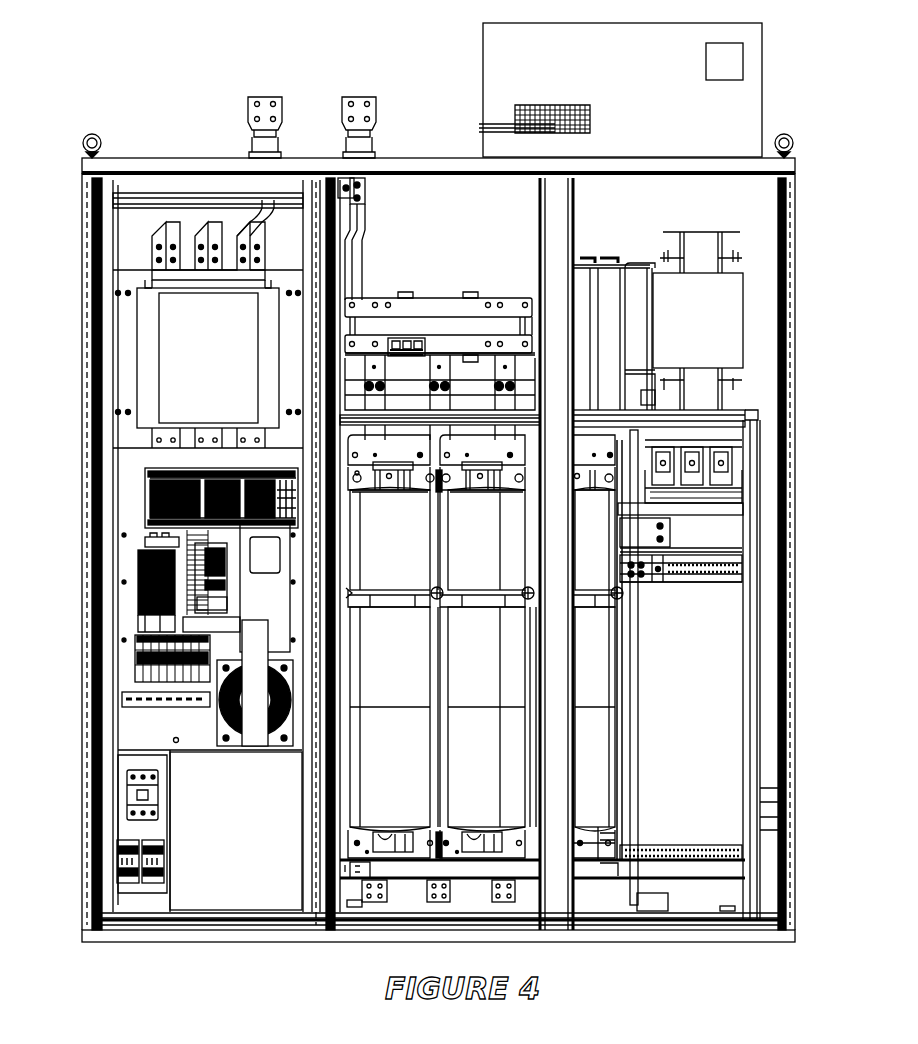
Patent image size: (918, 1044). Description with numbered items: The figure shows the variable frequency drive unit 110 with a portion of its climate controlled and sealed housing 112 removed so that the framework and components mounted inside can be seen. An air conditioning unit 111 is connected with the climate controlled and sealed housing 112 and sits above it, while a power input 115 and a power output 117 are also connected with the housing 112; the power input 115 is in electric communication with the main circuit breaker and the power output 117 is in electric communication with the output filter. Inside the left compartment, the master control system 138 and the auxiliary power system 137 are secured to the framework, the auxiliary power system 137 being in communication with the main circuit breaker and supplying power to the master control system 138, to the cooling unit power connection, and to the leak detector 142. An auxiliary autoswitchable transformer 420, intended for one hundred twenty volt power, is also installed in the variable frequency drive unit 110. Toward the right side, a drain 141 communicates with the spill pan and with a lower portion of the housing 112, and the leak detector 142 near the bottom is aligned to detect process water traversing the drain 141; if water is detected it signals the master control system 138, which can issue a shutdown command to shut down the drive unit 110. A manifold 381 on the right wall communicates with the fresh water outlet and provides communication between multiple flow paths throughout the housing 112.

The variable frequency drive unit 110 is at (78, 70).
The air conditioning unit 111 is at (483, 68).
The climate controlled and sealed housing 112 is at (792, 705).
The power input 115 is at (268, 97).
The power output 117 is at (361, 97).
The auxiliary power system 137 is at (190, 748).
The master control system 138 is at (145, 498).
The drain 141 is at (638, 710).
The leak detector 142 is at (668, 900).
The manifold 381 is at (770, 788).
The auxiliary autoswitchable transformer 420 is at (295, 698).